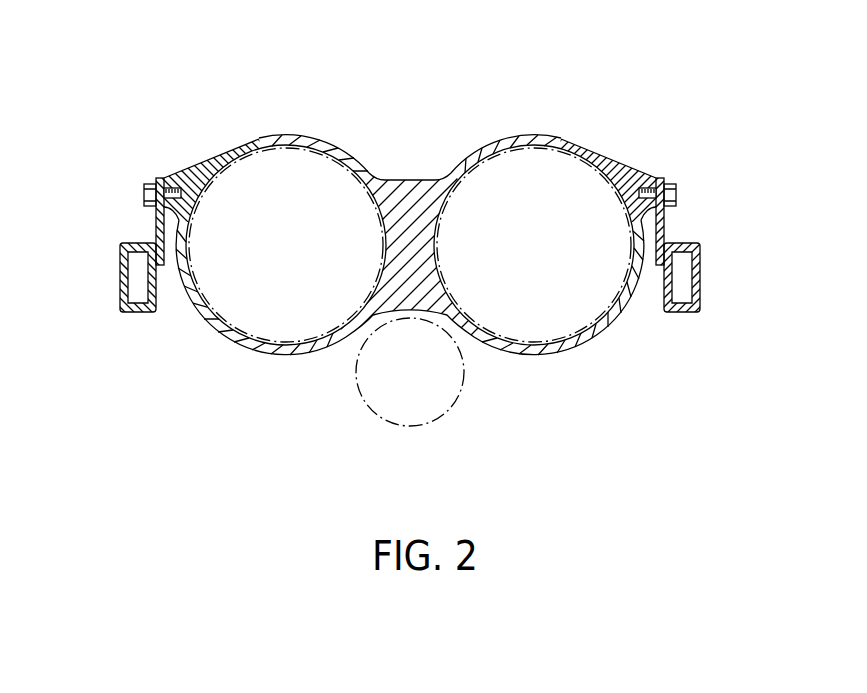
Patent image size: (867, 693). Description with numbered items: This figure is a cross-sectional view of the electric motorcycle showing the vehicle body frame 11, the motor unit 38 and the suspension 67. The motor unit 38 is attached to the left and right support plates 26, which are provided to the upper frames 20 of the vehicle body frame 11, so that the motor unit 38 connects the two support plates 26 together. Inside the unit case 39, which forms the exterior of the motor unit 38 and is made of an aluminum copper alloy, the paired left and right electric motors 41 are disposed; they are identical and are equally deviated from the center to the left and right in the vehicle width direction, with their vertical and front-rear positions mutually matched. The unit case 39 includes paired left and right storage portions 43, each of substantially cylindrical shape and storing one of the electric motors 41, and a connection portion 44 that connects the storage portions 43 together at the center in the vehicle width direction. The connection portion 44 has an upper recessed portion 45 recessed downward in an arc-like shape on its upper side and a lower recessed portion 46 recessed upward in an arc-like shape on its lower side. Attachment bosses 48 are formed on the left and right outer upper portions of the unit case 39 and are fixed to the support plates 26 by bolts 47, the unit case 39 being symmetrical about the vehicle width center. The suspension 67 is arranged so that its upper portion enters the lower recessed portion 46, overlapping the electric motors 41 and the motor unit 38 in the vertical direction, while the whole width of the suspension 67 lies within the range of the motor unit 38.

The motor unit 38 is at (539, 128).
The unit case 39 is at (283, 128).
The electric motor 41 is at (232, 338).
The storage portion 43 is at (262, 352).
The connection portion 44 is at (408, 202).
The upper recessed portion 45 is at (427, 180).
The lower recessed portion 46 is at (410, 310).
The bolt 47 is at (143, 194).
The attachment boss 48 is at (172, 178).
The support plate 26 is at (156, 222).
The upper frame 20 is at (433, 236).
The vehicle body frame 11 is at (120, 270).
The suspension 67 is at (453, 408).